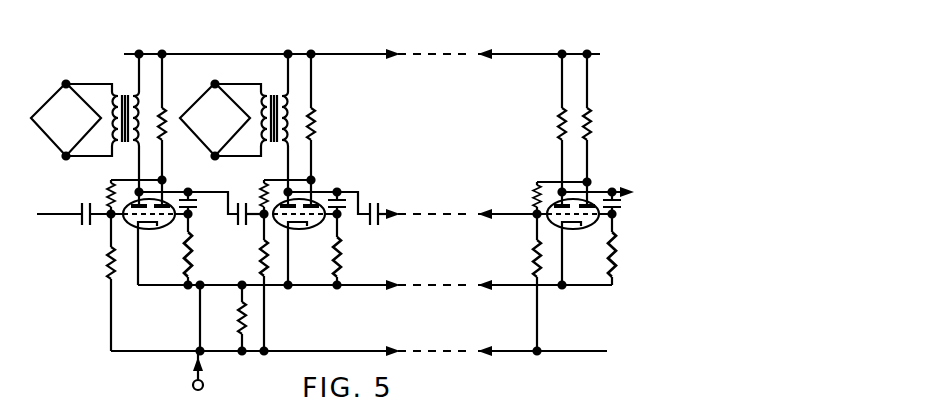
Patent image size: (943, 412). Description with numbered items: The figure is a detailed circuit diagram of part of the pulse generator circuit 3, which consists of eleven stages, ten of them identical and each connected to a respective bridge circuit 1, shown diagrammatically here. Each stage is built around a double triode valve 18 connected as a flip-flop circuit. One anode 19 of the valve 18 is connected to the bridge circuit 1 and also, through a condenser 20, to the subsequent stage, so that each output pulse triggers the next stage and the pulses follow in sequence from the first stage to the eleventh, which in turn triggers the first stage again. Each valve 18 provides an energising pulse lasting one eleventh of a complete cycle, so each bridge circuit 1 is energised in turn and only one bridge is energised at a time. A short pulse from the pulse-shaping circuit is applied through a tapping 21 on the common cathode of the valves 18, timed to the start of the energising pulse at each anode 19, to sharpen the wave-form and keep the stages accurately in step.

The bridge circuit 1 is at (72, 128).
The pulse generator circuit 3 is at (117, 37).
The double triode valve 18 is at (149, 229).
The anode 19 is at (138, 191).
The condenser 20 is at (229, 226).
The tapping 21 is at (210, 374).